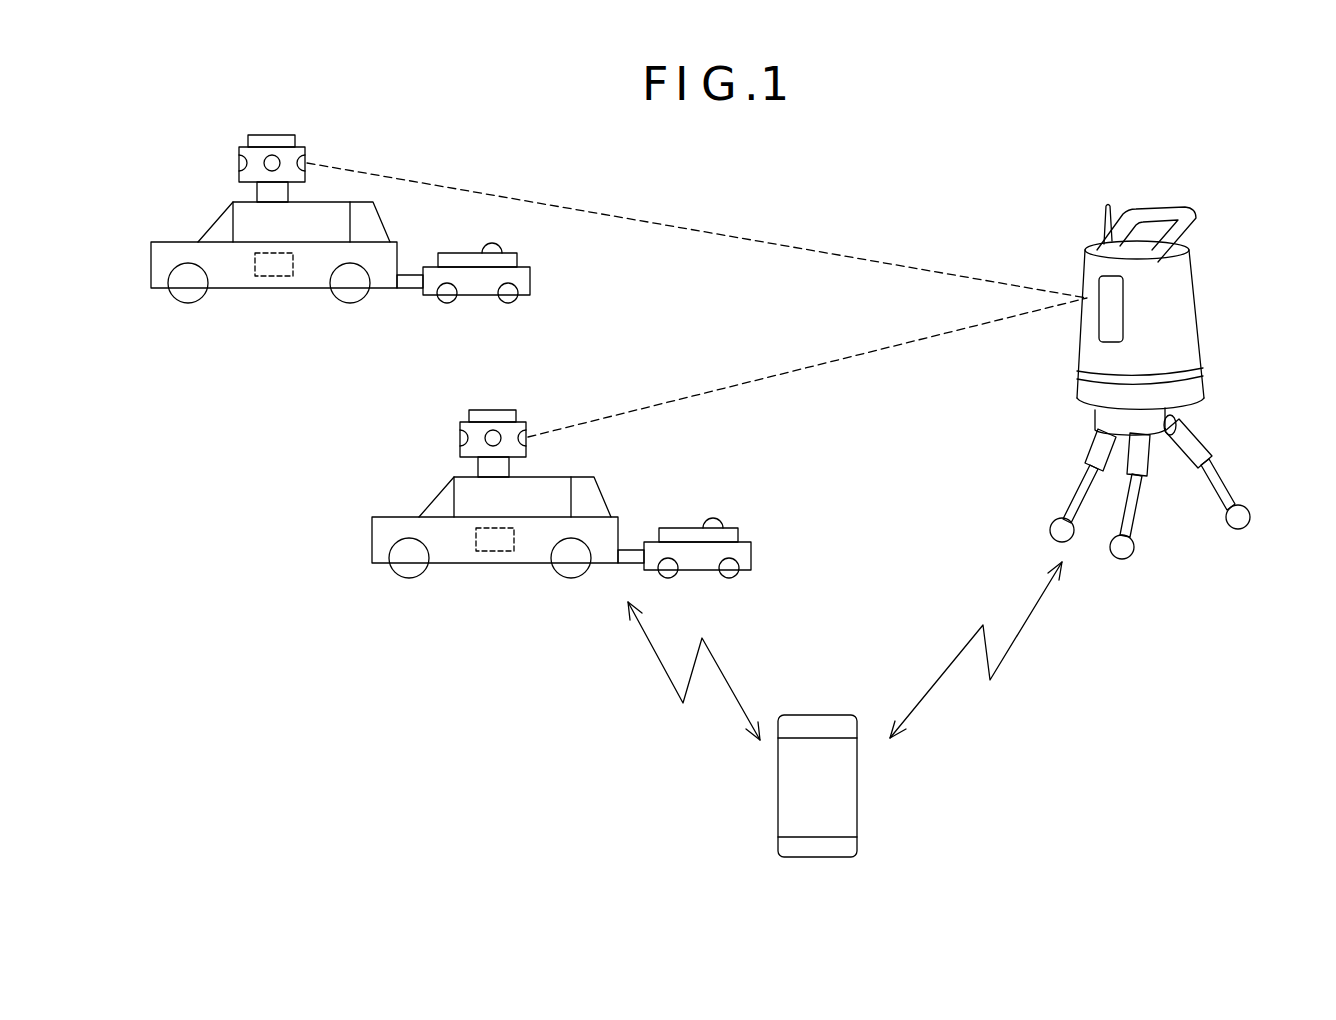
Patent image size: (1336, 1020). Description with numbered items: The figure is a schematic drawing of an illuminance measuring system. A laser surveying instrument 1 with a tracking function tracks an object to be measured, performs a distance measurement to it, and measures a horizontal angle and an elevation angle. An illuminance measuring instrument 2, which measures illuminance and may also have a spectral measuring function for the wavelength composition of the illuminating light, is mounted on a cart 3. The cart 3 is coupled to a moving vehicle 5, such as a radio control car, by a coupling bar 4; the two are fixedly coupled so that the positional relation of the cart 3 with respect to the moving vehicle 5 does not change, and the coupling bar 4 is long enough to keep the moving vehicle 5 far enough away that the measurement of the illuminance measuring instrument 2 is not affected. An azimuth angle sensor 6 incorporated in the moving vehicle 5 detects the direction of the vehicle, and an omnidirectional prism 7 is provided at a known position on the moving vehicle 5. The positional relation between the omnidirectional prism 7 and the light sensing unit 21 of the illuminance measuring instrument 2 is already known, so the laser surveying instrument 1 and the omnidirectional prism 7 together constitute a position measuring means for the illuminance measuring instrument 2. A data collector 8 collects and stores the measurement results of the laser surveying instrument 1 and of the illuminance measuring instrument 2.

The laser surveying instrument 1 is at (1145, 210).
The illuminance measuring instrument 2 is at (455, 253).
The light sensing unit 21 is at (495, 243).
The cart 3 is at (531, 280).
The coupling bar 4 is at (410, 272).
The moving vehicle 5 is at (178, 241).
The azimuth angle sensor 6 is at (278, 278).
The omnidirectional prism 7 is at (239, 152).
The data collector 8 is at (823, 713).